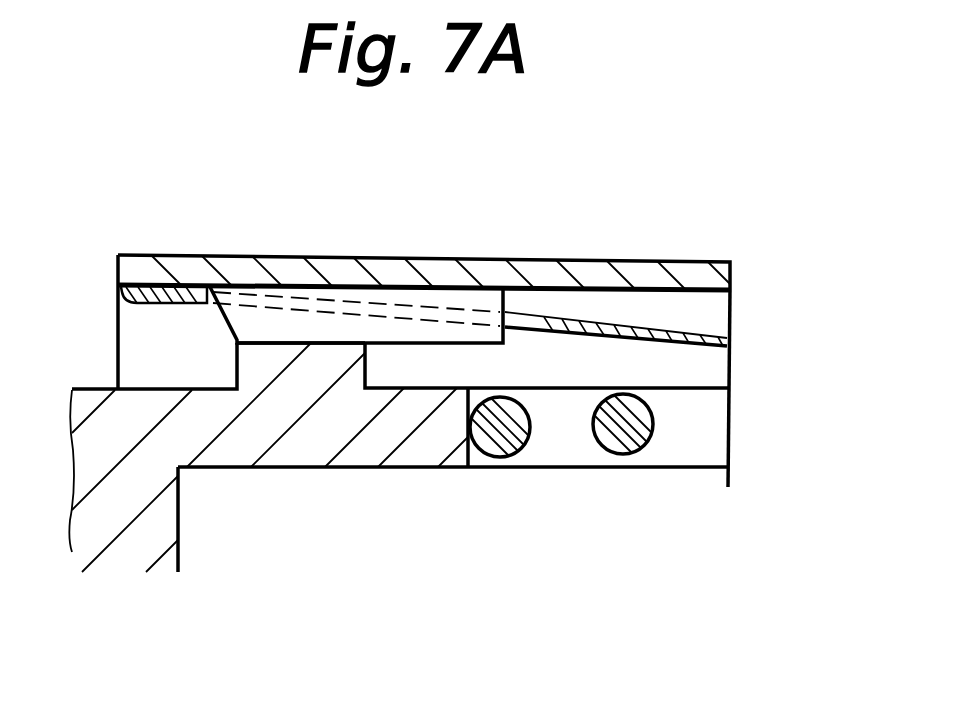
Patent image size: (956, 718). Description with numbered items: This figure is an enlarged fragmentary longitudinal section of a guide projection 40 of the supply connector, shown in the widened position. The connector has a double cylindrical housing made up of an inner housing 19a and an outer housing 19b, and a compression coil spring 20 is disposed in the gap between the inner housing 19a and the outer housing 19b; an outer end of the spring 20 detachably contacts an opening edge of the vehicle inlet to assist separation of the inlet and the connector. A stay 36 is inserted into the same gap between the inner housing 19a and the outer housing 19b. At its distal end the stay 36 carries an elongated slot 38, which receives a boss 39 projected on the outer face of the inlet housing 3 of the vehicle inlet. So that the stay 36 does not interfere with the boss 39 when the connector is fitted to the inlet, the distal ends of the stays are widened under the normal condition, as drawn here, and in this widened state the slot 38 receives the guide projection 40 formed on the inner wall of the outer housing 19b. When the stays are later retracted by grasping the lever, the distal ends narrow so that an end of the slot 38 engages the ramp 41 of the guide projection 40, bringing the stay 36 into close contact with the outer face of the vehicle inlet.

The inlet housing 3 is at (163, 531).
The inner housing 19a is at (683, 473).
The outer housing 19b is at (637, 262).
The compression coil spring 20 is at (505, 443).
The stay 36 is at (680, 324).
The elongated slot 38 is at (525, 323).
The boss 39 is at (368, 362).
The guide projection 40 is at (278, 325).
The ramp 41 is at (232, 338).